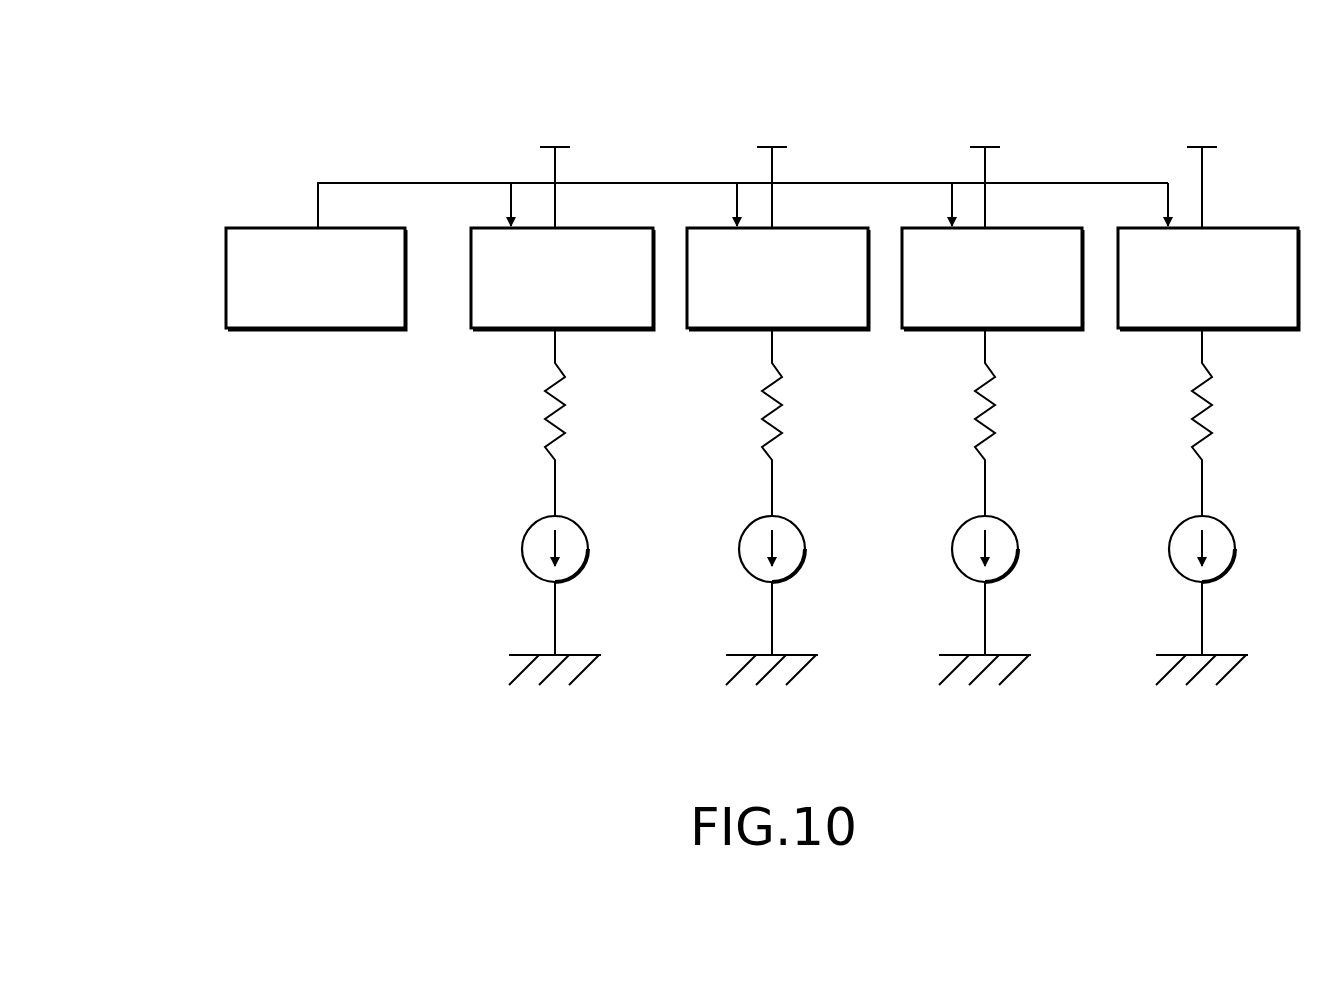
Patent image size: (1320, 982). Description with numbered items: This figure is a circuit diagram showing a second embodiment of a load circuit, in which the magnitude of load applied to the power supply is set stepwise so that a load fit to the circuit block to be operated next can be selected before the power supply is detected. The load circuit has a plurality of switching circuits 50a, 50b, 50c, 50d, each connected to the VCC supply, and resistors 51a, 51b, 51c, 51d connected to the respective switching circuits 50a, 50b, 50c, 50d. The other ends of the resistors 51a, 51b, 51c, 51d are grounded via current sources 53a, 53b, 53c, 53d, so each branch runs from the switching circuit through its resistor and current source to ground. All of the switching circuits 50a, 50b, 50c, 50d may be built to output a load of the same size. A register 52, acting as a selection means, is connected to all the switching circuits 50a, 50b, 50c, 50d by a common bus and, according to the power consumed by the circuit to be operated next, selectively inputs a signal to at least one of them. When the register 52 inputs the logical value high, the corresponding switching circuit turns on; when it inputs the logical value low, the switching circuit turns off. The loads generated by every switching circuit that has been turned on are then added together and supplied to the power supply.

The register 52 is at (282, 228).
The switching circuit 50a is at (492, 228).
The switching circuit 50b is at (717, 228).
The switching circuit 50c is at (930, 228).
The switching circuit 50d is at (1145, 228).
The resistor 51a is at (552, 402).
The resistor 51b is at (769, 402).
The resistor 51c is at (982, 402).
The resistor 51d is at (1199, 402).
The current source 53a is at (522, 556).
The current source 53b is at (739, 556).
The current source 53c is at (952, 556).
The current source 53d is at (1169, 556).